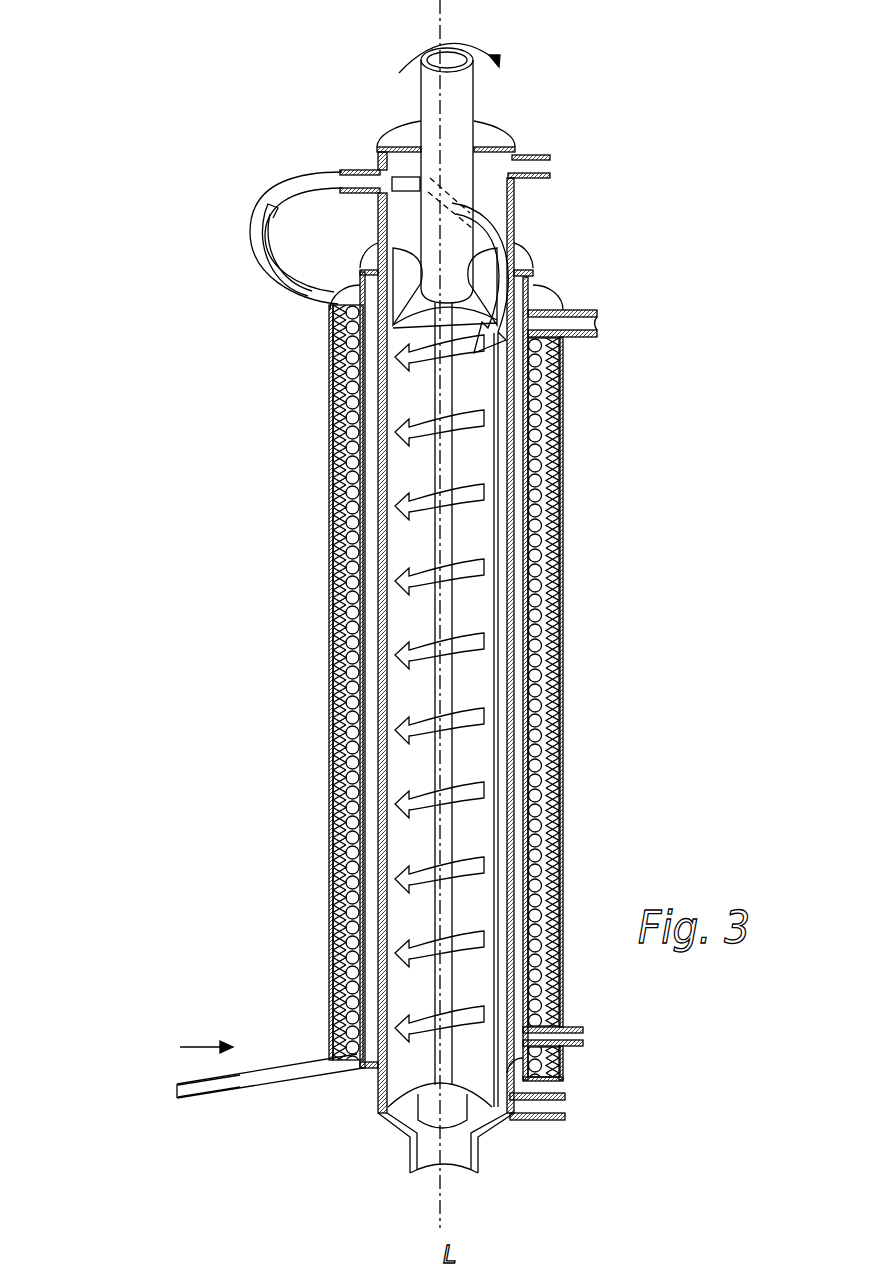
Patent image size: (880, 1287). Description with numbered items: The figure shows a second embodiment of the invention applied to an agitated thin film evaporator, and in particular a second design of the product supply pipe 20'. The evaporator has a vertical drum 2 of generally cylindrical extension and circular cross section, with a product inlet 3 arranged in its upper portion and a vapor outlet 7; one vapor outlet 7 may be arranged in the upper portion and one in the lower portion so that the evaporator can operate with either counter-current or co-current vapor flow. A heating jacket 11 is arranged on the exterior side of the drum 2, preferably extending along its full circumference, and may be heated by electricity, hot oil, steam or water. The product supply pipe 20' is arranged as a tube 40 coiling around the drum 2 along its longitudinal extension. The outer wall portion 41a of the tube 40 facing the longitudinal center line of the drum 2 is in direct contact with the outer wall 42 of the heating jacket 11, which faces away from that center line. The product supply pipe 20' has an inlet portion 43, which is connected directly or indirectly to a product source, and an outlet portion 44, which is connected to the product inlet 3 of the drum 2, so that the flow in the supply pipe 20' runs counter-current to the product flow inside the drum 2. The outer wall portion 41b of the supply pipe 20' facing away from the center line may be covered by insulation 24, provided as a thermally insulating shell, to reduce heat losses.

The vertical drum 2 is at (520, 208).
The product inlet 3 is at (350, 172).
The vapor outlet 7 is at (552, 160).
The heating jacket 11 is at (370, 768).
The product supply pipe 20' is at (390, 707).
The insulation 24 is at (327, 533).
The tube 40 is at (268, 1076).
The outer wall portion 41a is at (335, 887).
The outer wall portion 41b is at (330, 815).
The outer wall 42 is at (335, 940).
The inlet portion 43 is at (236, 1086).
The outlet portion 44 is at (302, 186).